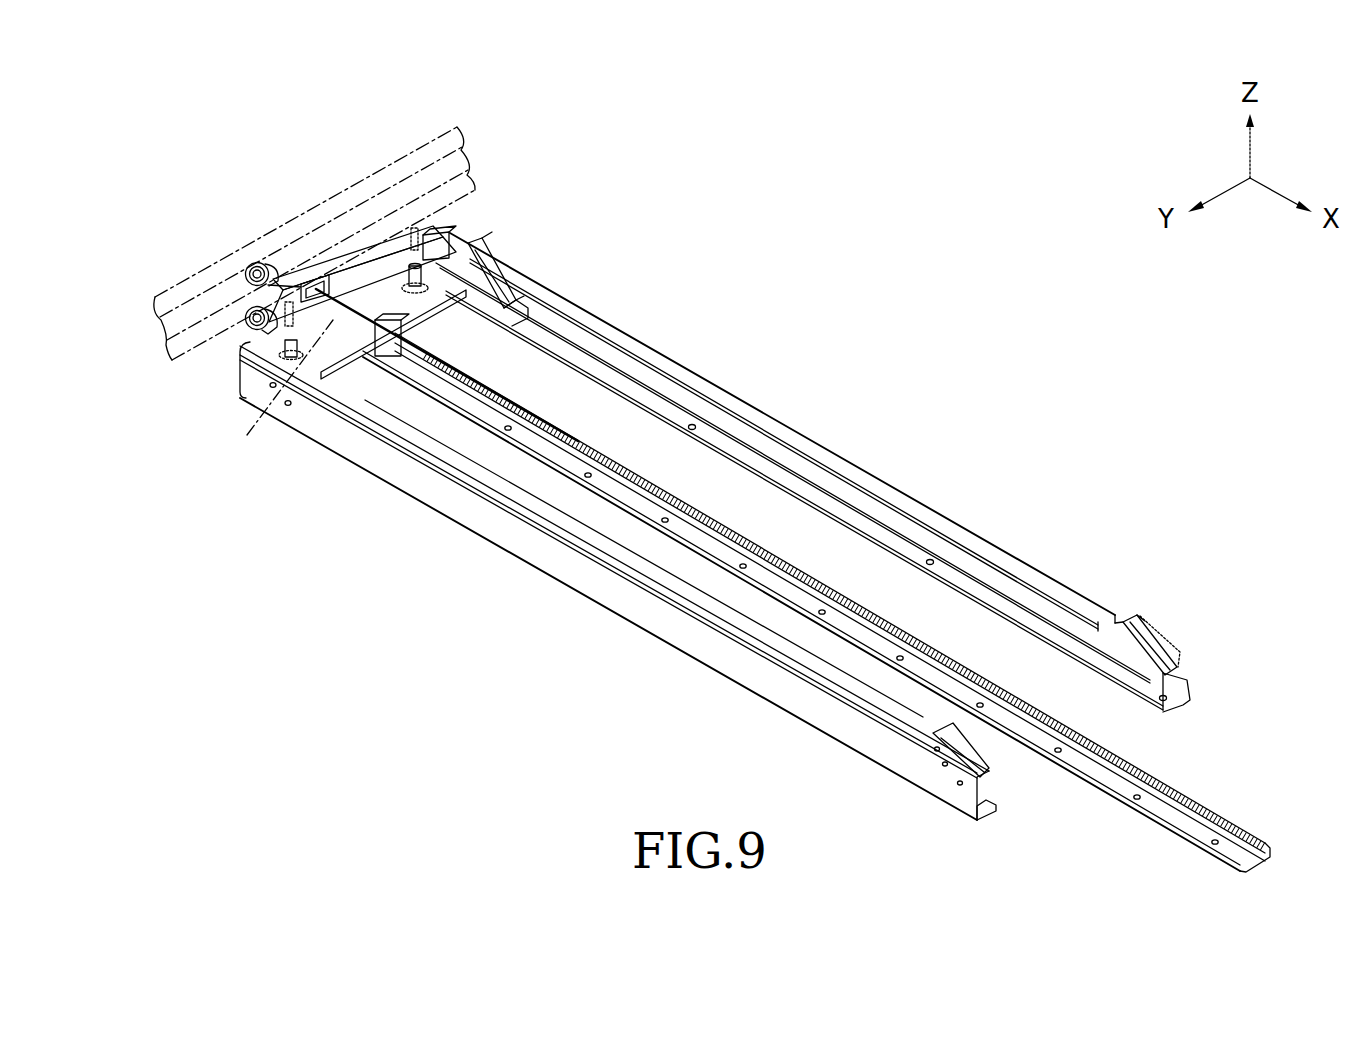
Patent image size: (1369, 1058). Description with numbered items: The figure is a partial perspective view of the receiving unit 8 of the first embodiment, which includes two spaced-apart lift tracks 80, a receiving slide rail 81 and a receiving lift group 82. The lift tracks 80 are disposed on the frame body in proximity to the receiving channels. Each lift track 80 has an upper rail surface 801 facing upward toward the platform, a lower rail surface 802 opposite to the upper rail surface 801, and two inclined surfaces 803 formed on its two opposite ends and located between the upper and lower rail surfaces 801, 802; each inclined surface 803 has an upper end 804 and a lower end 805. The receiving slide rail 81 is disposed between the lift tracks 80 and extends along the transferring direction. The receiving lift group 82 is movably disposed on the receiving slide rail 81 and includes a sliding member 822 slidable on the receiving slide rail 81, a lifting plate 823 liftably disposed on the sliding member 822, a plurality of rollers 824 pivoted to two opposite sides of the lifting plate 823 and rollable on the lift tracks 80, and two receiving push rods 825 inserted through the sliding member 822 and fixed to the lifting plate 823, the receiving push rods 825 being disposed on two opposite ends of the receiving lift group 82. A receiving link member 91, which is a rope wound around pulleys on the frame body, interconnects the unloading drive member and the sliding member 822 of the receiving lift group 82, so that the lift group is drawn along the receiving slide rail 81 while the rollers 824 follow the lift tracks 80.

The receiving unit 8 is at (431, 219).
The lift track 80 is at (640, 340).
The upper rail surface 801 is at (888, 495).
The lower rail surface 802 is at (795, 483).
The inclined surface 803 is at (480, 267).
The upper end 804 is at (473, 240).
The lower end 805 is at (513, 307).
The receiving slide rail 81 is at (693, 510).
The receiving lift group 82 is at (387, 257).
The sliding member 822 is at (347, 367).
The lifting plate 823 is at (300, 283).
The roller 824 is at (258, 325).
The receiving push rod 825 is at (251, 274).
The receiving link member 91 is at (275, 398).